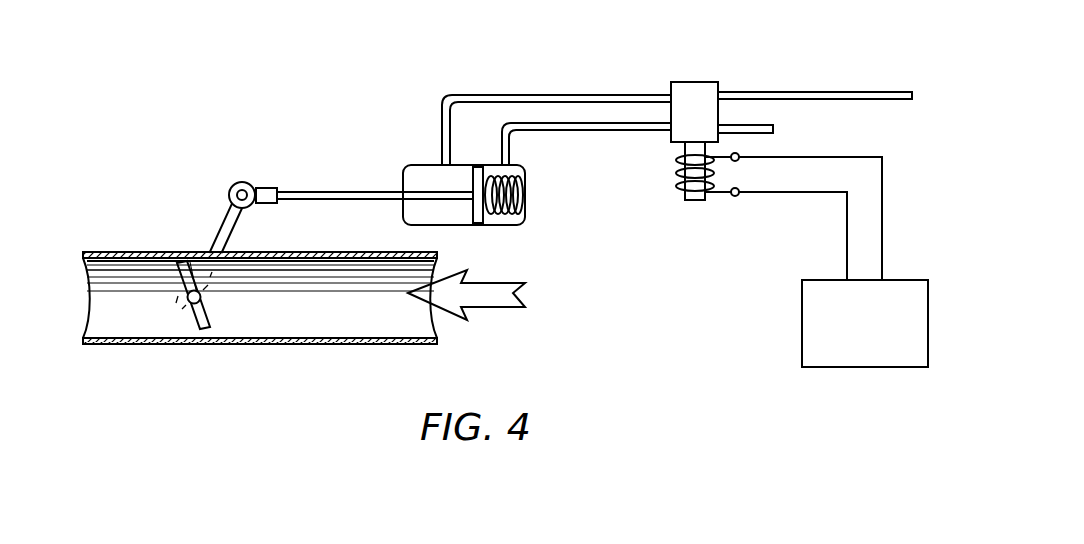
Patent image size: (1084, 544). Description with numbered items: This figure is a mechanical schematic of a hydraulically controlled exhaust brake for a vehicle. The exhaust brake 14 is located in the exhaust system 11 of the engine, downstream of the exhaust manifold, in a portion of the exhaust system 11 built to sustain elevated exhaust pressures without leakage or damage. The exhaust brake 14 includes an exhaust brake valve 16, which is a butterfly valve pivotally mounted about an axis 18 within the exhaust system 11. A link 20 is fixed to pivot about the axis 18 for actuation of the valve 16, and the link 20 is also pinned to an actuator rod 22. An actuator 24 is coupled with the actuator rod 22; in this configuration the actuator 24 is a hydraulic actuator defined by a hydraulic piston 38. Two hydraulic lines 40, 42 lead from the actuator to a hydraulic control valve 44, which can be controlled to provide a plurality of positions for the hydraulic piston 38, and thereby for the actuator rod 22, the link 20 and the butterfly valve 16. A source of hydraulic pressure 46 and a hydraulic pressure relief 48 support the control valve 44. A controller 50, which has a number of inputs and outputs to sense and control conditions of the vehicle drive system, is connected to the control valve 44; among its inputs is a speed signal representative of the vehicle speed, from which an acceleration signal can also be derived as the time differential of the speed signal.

The exhaust system 11 is at (334, 346).
The exhaust brake 14 is at (190, 321).
The exhaust brake valve 16 is at (214, 312).
The axis 18 is at (185, 296).
The link 20 is at (225, 219).
The actuator rod 22 is at (303, 188).
The actuator 24 is at (392, 179).
The hydraulic piston 38 is at (479, 226).
The hydraulic line 40 is at (520, 94).
The hydraulic line 42 is at (546, 131).
The hydraulic control valve 44 is at (716, 76).
The source of hydraulic pressure 46 is at (832, 91).
The hydraulic pressure relief 48 is at (773, 128).
The controller 50 is at (920, 278).